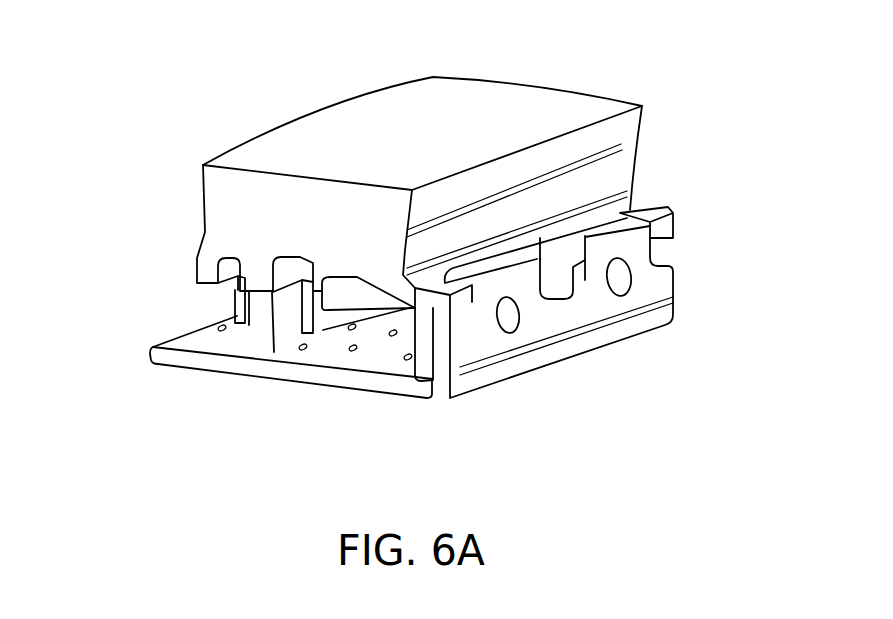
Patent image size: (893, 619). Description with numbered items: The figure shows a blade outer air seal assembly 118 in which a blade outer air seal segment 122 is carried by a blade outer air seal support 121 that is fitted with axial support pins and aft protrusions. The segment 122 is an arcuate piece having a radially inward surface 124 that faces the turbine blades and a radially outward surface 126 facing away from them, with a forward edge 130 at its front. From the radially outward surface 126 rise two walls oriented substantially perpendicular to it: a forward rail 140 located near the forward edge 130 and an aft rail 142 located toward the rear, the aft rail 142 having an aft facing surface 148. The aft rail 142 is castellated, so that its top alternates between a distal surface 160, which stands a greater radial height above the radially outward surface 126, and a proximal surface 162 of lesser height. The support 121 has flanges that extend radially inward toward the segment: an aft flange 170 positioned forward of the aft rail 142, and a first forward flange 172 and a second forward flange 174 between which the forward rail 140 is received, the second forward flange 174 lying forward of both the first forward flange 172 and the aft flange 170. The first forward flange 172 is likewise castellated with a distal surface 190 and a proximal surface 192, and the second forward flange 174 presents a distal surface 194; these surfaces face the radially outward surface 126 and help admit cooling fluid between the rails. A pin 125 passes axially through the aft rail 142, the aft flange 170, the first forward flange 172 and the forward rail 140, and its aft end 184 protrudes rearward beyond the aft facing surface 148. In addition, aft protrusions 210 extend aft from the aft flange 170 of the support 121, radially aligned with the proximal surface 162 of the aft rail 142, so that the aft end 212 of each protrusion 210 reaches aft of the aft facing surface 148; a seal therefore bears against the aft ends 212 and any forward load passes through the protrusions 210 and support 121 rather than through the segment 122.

The blade outer air seal assembly 118 is at (159, 117).
The blade outer air seal support 121 is at (523, 100).
The blade outer air seal segment 122 is at (212, 353).
The radially inward surface 124 is at (336, 388).
The pin 125 is at (357, 275).
The radially outward surface 126 is at (389, 360).
The forward edge 130 is at (158, 344).
The forward rail 140 is at (254, 320).
The aft rail 142 is at (640, 283).
The aft facing surface 148 is at (555, 327).
The distal surface 160 is at (632, 209).
The proximal surface 162 is at (657, 268).
The aft flange 170 is at (437, 374).
The first forward flange 172 is at (312, 264).
The second forward flange 174 is at (237, 303).
The aft end 184 is at (508, 320).
The distal surface 190 is at (281, 306).
The proximal surface 192 is at (308, 352).
The distal surface 194 is at (181, 288).
The aft protrusion 210 is at (563, 241).
The aft end 212 is at (461, 299).